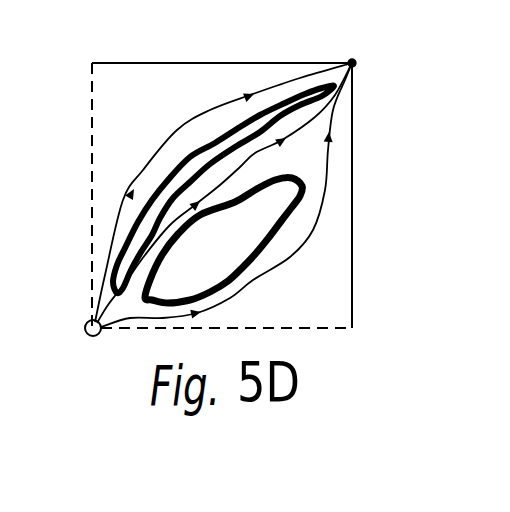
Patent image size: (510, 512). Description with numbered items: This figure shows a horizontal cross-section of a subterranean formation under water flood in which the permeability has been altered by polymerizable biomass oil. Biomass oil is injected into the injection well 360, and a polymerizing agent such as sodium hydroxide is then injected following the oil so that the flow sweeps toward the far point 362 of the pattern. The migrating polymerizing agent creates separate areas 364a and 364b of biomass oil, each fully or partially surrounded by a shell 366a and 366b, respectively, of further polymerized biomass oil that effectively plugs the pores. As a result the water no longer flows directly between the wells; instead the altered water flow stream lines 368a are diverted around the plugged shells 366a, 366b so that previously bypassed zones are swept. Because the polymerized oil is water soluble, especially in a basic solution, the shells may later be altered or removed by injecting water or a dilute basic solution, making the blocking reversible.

The injection well 360 is at (85, 330).
The end point / target location 362 is at (354, 61).
The area of biomass oil 364a is at (244, 260).
The area of biomass oil 364b is at (127, 245).
The shell of polymerized oil 366a is at (244, 269).
The shell of polymerized oil 366b is at (190, 158).
The altered water flow stream line 368a is at (215, 110).